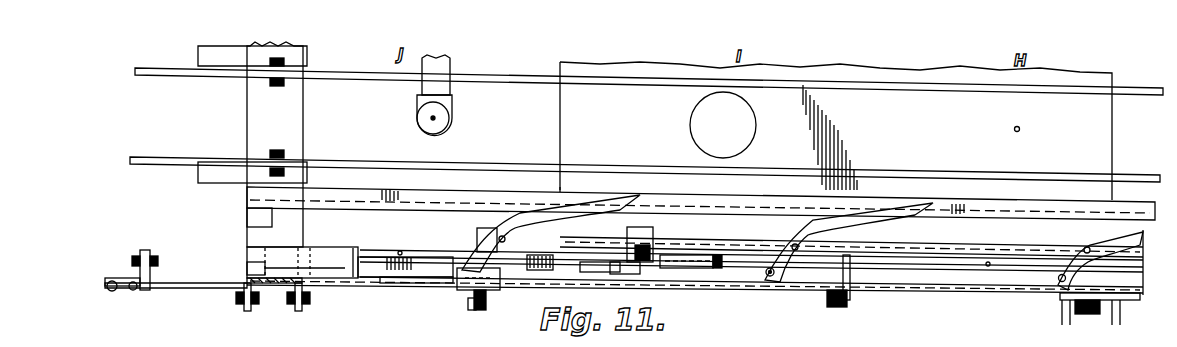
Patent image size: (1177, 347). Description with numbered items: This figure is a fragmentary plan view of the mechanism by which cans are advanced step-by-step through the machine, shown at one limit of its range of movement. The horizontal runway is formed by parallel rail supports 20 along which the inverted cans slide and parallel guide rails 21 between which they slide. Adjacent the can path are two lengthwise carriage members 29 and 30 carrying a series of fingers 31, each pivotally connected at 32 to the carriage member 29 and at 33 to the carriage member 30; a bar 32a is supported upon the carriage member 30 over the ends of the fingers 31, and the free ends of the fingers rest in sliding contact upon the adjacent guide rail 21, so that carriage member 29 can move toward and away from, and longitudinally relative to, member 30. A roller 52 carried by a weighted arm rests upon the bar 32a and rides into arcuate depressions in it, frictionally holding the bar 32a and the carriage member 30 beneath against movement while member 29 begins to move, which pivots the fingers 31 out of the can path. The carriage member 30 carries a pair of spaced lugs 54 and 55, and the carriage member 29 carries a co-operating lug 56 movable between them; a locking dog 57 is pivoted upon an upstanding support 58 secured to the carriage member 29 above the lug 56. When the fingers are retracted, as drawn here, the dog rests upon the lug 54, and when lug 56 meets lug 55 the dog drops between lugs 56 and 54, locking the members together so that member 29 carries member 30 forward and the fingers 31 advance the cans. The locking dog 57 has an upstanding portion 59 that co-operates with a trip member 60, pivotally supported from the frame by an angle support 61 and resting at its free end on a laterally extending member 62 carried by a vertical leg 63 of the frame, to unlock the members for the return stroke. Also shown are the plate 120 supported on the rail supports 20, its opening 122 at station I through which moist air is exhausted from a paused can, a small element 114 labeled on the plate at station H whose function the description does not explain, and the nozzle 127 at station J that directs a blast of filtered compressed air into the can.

The rail supports 20 is at (1127, 92).
The guide rails 21 is at (1143, 182).
The carriage member 29 is at (970, 243).
The carriage member 30 is at (385, 278).
The fingers 31 is at (890, 228).
The pivotal connection 32 is at (500, 237).
The bar 32a is at (966, 278).
The pivotal connection 33 is at (476, 250).
The roller 52 is at (852, 284).
The lug 54 is at (696, 283).
The lug 55 is at (580, 272).
The lug 56 is at (630, 272).
The locking dog 57 is at (714, 272).
The upstanding support 58 is at (645, 245).
The upstanding portion 59 is at (605, 274).
The trip member 60 is at (340, 245).
The angle support 61 is at (337, 285).
The laterally extending member 62 is at (246, 268).
The vertical leg 63 is at (254, 297).
The pin 114 is at (1014, 129).
The plate 120 is at (562, 134).
The opening 122 is at (690, 125).
The nozzle 127 is at (418, 118).